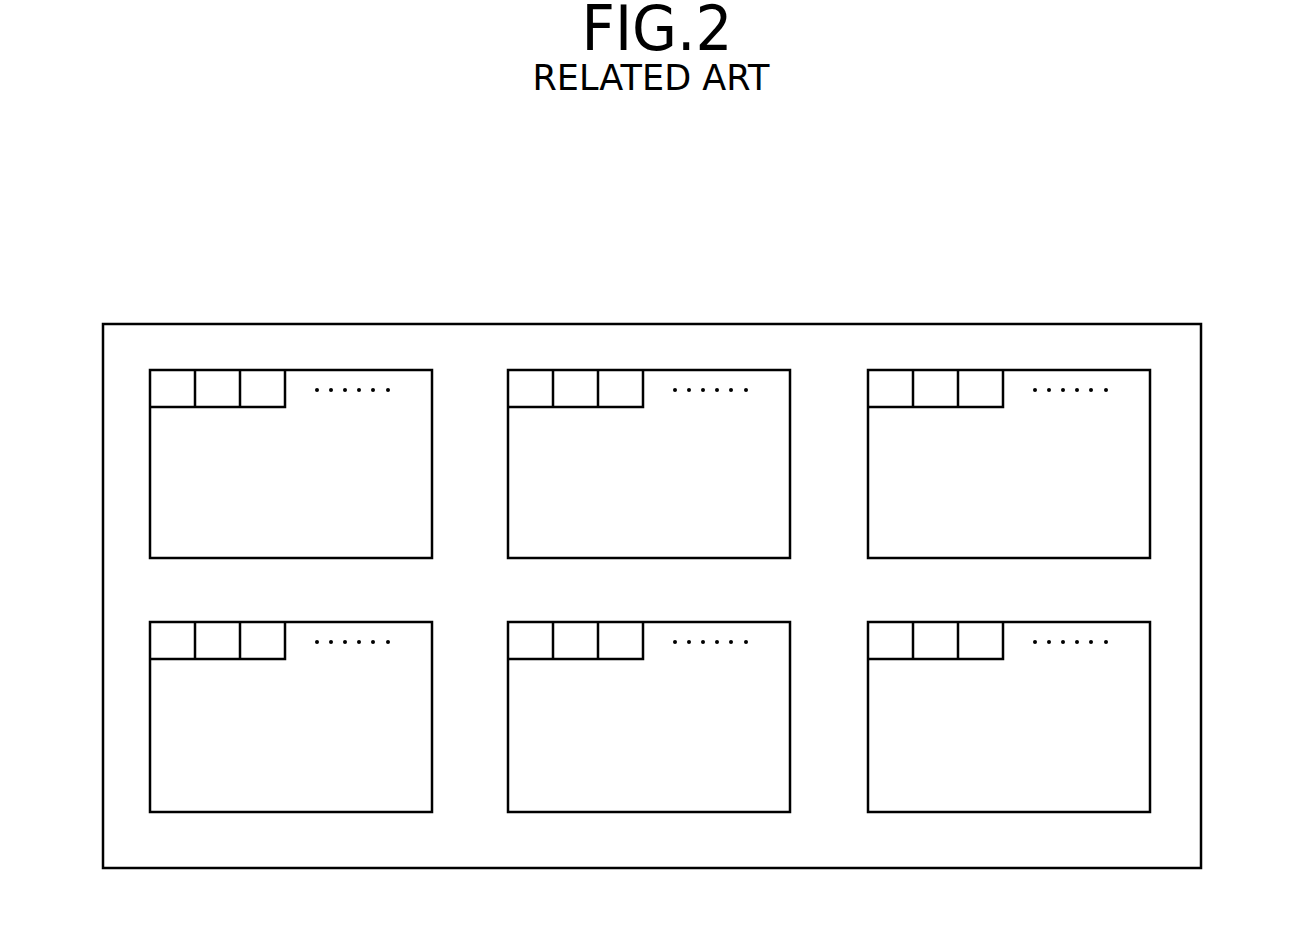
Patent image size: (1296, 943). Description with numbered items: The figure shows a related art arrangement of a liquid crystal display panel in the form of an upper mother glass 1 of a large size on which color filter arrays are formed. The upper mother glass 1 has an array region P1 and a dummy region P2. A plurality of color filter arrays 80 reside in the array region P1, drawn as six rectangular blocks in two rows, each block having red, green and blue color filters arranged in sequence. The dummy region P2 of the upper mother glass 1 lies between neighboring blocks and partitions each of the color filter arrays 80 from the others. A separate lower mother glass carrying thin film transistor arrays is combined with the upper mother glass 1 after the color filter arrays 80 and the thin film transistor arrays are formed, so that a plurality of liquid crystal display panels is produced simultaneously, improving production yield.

The upper mother glass 1 is at (1182, 413).
The color filter array 80 is at (388, 376).
The array region P1 is at (650, 591).
The dummy region P2 is at (653, 586).